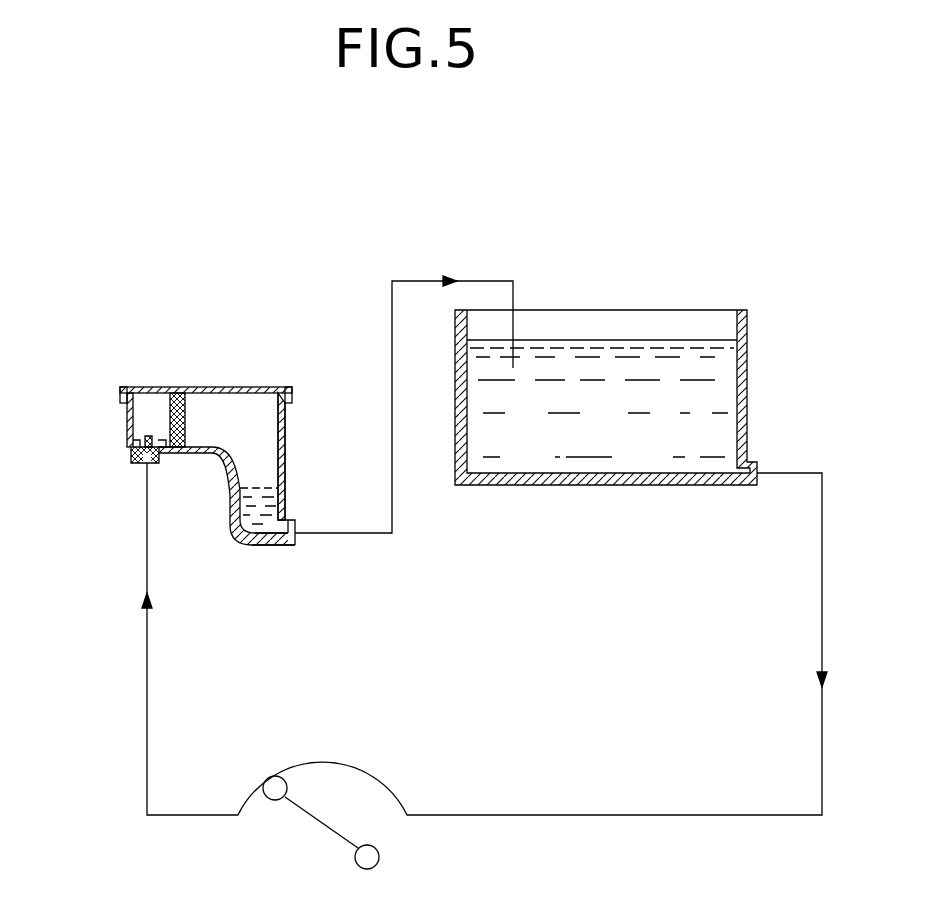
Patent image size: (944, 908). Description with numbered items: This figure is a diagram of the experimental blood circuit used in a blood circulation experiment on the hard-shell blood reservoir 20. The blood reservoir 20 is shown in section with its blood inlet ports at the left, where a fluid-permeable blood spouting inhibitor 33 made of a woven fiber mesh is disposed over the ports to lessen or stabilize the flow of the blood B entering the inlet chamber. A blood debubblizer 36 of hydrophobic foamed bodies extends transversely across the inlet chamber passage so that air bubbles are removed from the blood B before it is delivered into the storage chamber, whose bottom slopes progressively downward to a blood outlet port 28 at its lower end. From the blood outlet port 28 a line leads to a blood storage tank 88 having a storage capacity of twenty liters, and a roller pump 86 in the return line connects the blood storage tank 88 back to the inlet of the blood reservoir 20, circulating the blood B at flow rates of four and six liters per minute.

The blood reservoir 20 is at (212, 381).
The blood debubblizer 36 is at (173, 390).
The blood spouting inhibitor 33 is at (147, 442).
The blood outlet port 28 is at (287, 546).
The blood B is at (272, 508).
The blood storage tank 88 is at (747, 372).
The roller pump 86 is at (312, 813).